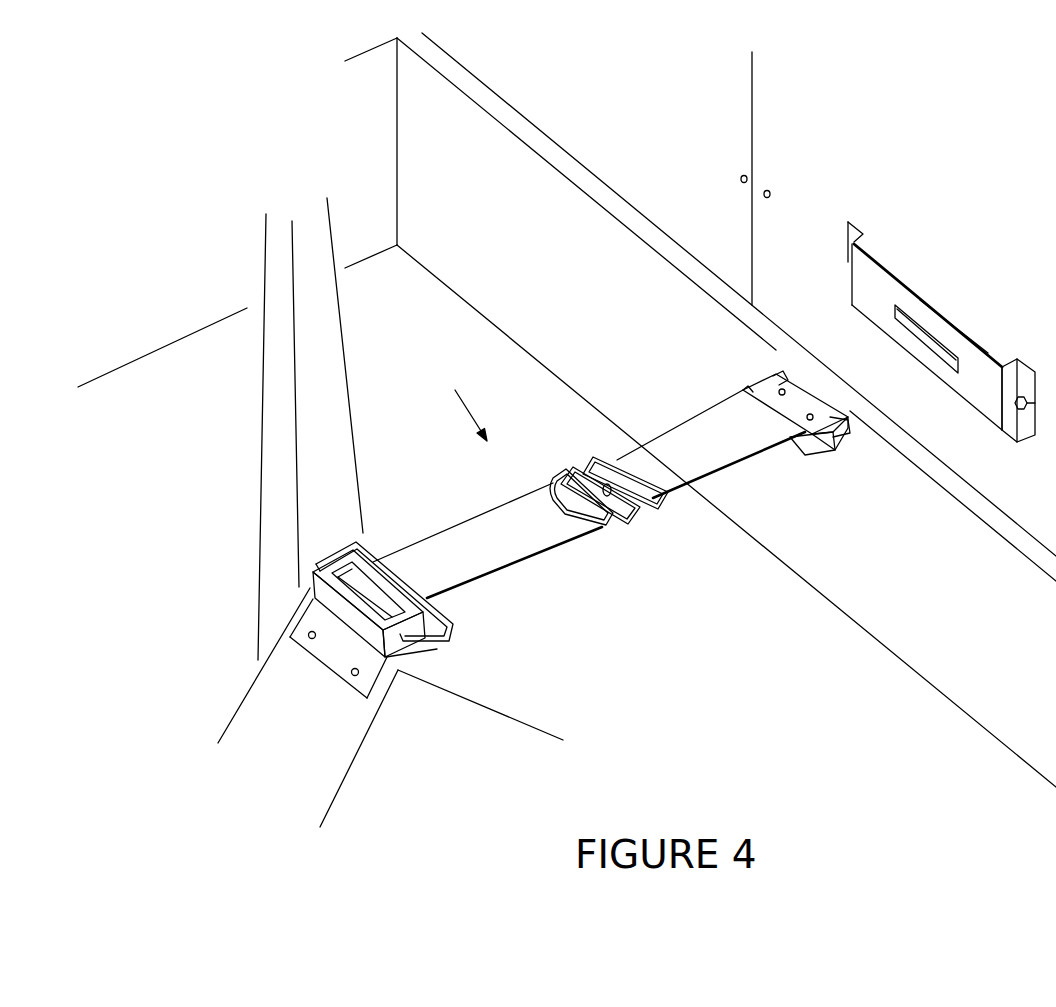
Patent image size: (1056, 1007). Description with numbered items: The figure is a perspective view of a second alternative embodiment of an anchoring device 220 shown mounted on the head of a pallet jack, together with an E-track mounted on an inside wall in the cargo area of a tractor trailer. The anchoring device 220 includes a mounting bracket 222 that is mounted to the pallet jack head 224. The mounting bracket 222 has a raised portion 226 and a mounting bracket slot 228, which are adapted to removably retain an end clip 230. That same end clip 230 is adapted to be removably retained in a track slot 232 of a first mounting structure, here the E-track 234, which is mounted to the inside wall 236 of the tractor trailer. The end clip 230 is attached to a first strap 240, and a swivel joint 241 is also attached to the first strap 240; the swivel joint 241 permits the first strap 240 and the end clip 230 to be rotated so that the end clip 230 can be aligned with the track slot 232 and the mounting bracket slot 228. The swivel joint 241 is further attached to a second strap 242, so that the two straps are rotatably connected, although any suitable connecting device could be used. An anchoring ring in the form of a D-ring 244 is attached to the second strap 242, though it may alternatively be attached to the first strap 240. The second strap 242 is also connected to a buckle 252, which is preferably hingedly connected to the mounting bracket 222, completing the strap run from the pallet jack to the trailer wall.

The anchoring device 220 is at (450, 401).
The mounting bracket 222 is at (325, 650).
The pallet jack head 224 is at (520, 707).
The raised portion 226 is at (322, 590).
The mounting bracket slot 228 is at (343, 585).
The end clip 230 is at (800, 392).
The track slot 232 is at (913, 330).
The E-track 234 is at (985, 390).
The inside wall 236 is at (997, 178).
The first strap 240 is at (720, 445).
The swivel joint 241 is at (602, 457).
The second strap 242 is at (487, 540).
The D-ring 244 is at (577, 523).
The buckle 252 is at (362, 545).